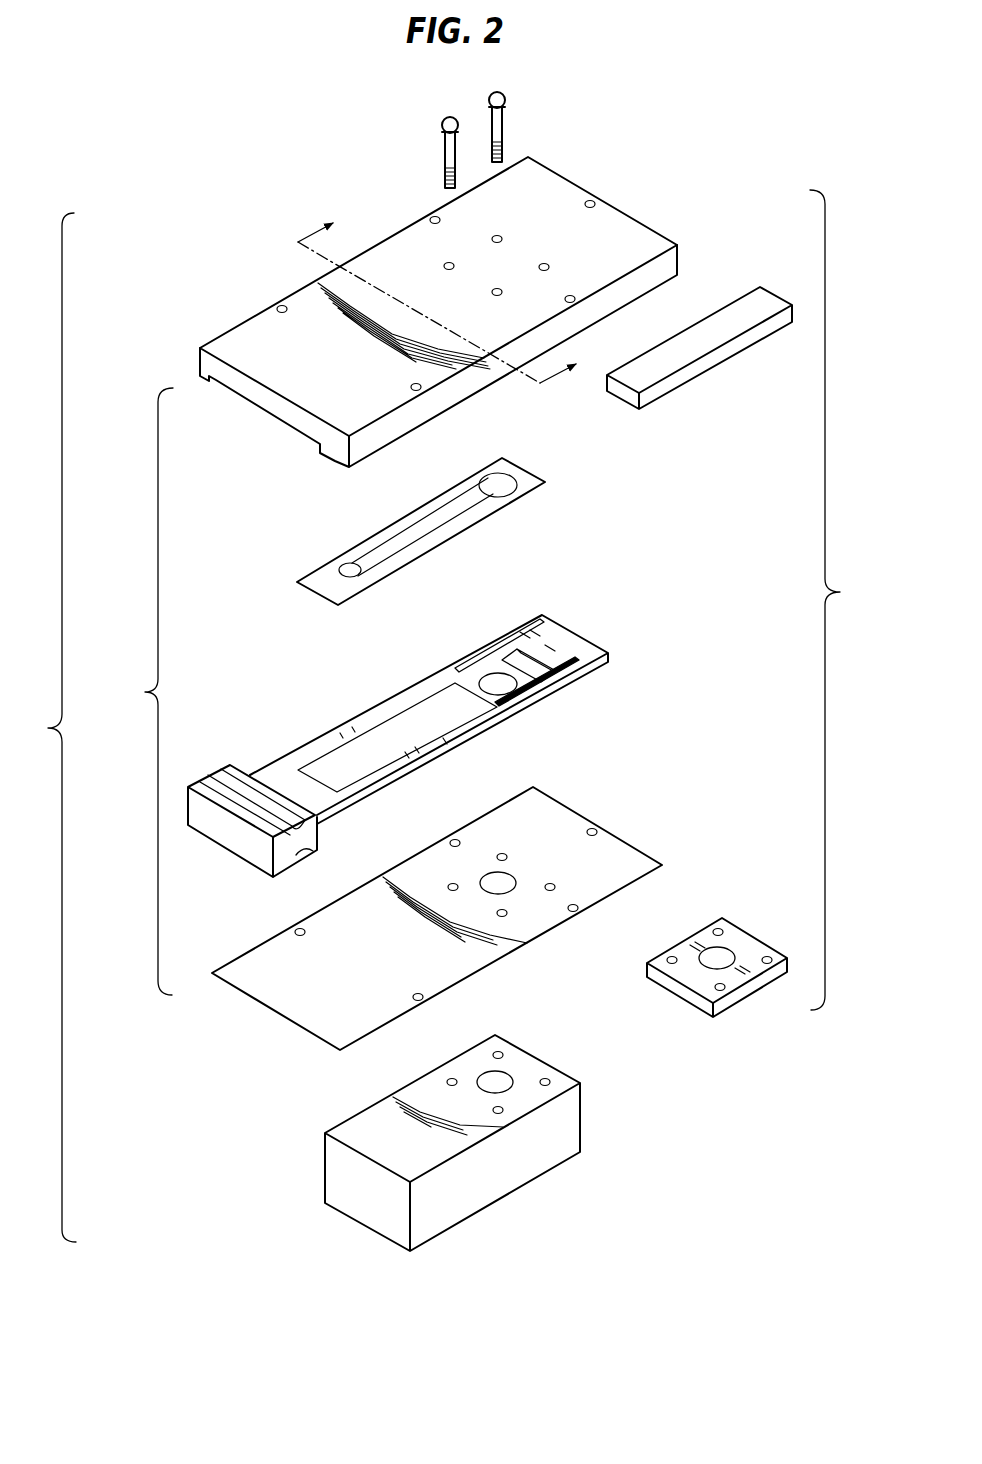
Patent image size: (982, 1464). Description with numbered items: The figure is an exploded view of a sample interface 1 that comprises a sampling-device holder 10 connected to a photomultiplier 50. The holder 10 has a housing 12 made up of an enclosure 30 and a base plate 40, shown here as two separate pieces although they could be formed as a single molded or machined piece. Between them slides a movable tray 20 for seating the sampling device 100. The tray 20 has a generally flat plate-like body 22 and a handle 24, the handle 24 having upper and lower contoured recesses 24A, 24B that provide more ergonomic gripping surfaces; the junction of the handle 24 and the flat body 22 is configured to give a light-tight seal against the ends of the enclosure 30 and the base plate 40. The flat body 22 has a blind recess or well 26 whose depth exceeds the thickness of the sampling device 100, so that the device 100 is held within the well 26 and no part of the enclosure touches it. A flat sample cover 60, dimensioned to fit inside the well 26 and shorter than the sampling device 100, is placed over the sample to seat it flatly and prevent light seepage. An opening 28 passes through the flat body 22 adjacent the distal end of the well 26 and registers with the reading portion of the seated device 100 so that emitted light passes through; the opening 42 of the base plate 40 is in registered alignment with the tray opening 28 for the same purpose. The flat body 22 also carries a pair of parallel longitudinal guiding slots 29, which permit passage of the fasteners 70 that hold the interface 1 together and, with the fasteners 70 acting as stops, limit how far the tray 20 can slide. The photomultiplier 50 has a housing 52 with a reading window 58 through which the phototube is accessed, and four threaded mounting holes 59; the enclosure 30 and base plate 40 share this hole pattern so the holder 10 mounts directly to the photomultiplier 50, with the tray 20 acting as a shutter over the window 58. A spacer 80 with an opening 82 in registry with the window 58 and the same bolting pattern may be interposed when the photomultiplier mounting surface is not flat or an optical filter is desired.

The interface 1 is at (52, 727).
The sampling-device holder 10 is at (843, 600).
The housing 12 is at (142, 691).
The movable tray 20 is at (420, 735).
The flat plate-like body 22 is at (454, 696).
The handle 24 is at (286, 806).
The upper contoured recess 24A is at (221, 783).
The lower contoured recess 24B is at (313, 856).
The well 26 is at (410, 731).
The opening 28 is at (525, 690).
The guiding slots 29 is at (571, 652).
The enclosure 30 is at (331, 367).
The base plate 40 is at (437, 918).
The opening 42 is at (501, 880).
The photomultiplier 50 is at (431, 1150).
The housing 52 is at (482, 1182).
The reading window 58 is at (503, 1078).
The threaded mounting holes 59 is at (497, 1107).
The sample cover 60 is at (734, 360).
The fasteners 70 is at (456, 159).
The spacer 80 is at (726, 971).
The opening 82 is at (723, 955).
The sampling device 100 is at (566, 481).